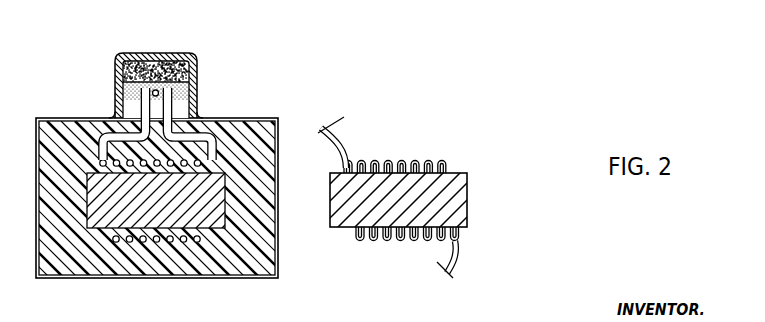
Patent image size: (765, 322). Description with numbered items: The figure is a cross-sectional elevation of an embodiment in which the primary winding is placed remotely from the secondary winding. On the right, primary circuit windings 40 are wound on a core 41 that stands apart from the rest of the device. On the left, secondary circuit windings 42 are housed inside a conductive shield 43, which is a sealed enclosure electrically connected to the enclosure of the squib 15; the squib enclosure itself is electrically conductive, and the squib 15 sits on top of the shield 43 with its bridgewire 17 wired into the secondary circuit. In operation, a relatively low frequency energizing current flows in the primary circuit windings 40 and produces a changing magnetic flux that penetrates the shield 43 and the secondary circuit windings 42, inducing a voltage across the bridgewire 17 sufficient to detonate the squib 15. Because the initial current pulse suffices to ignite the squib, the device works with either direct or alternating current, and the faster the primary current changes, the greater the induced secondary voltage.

The squib 15 is at (120, 57).
The bridgewire 17 is at (161, 87).
The primary circuit windings 40 is at (439, 163).
The core 41 is at (464, 191).
The secondary circuit windings 42 is at (197, 243).
The conductive shield 43 is at (233, 278).